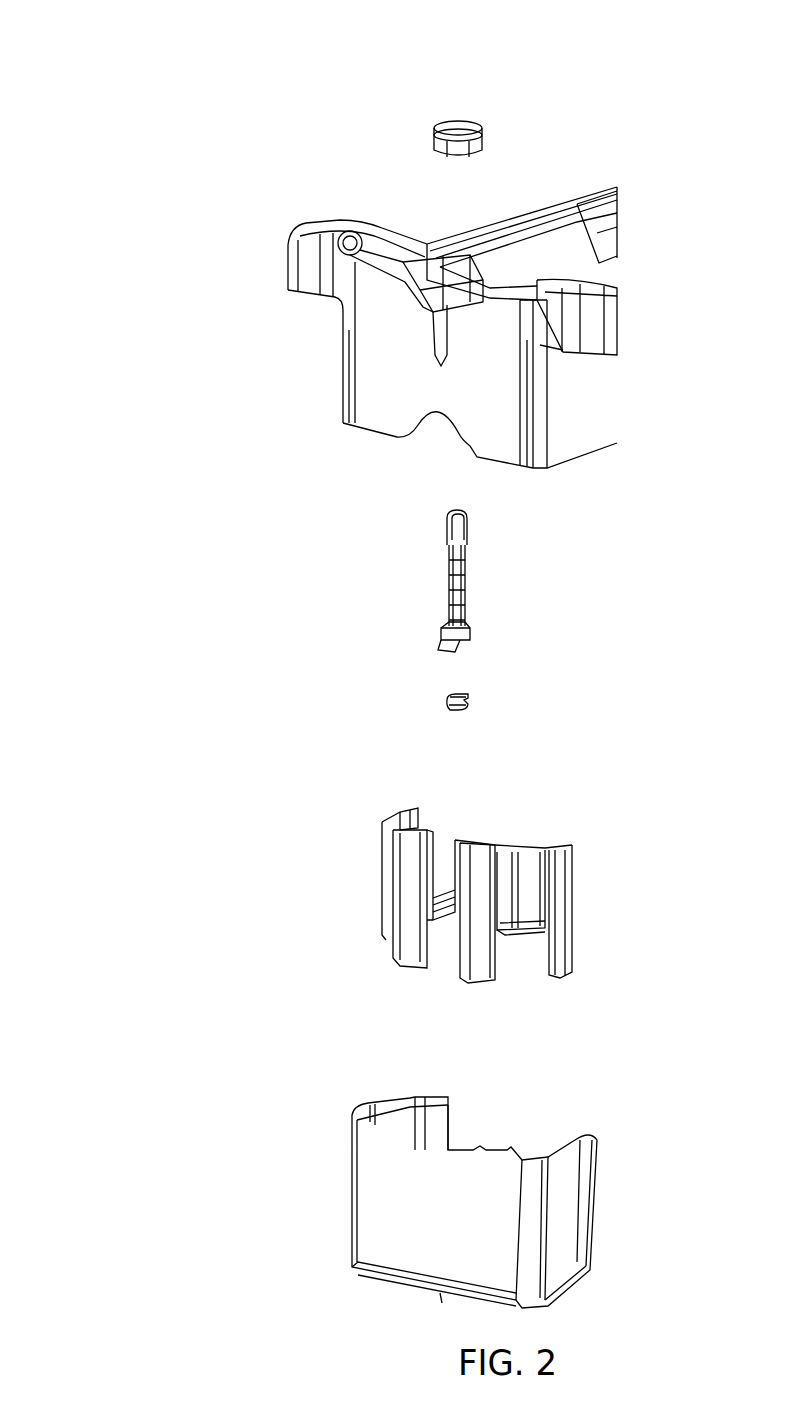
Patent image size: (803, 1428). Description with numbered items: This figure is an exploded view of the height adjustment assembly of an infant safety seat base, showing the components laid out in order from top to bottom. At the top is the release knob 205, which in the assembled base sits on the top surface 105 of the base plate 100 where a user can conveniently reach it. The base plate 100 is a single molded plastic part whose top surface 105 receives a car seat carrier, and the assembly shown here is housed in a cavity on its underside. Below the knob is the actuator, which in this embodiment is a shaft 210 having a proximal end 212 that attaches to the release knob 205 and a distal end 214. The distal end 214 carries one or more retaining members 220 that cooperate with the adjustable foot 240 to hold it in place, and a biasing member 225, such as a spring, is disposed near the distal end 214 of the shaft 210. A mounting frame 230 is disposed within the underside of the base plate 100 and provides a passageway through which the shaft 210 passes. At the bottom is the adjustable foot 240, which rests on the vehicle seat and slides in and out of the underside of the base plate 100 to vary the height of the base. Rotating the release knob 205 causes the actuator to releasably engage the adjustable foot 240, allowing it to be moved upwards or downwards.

The base plate 100 is at (285, 278).
The top surface 105 is at (525, 208).
The release knob 205 is at (433, 132).
The shaft 210 is at (391, 559).
The proximal end 212 is at (470, 528).
The distal end 214 is at (475, 635).
The retaining members 220 is at (432, 635).
The biasing member 225 is at (437, 700).
The mounting frame 230 is at (382, 900).
The adjustable foot 240 is at (352, 1180).